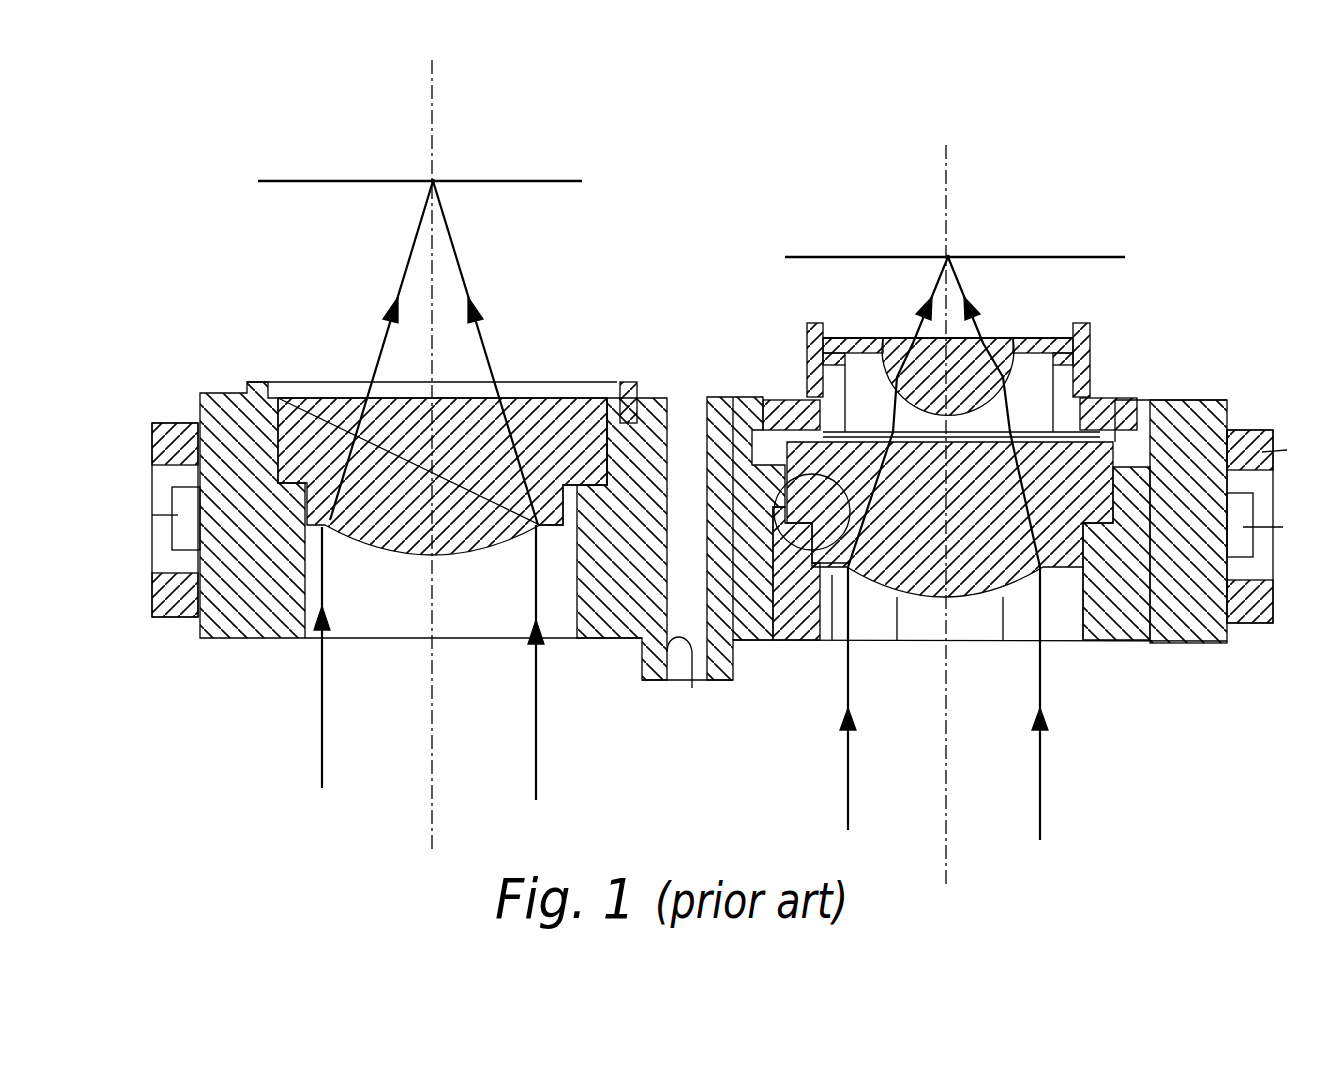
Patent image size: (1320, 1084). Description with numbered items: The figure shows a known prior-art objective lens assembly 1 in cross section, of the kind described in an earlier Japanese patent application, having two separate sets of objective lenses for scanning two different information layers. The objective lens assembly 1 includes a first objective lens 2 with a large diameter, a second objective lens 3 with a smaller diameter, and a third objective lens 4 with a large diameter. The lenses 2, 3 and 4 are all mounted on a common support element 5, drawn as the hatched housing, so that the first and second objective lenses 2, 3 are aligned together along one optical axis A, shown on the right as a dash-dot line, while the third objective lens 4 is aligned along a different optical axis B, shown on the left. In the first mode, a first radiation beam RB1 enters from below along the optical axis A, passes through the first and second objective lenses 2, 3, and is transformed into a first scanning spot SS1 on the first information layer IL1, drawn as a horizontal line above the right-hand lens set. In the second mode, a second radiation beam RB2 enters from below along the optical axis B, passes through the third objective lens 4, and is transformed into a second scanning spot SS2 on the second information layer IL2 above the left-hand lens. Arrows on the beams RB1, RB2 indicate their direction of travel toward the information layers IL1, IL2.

The objective lens assembly 1 is at (172, 183).
The first objective lens 2 is at (997, 641).
The second objective lens 3 is at (901, 641).
The third objective lens 4 is at (270, 400).
The support element 5 is at (600, 638).
The first radiation beam RB1 is at (1042, 817).
The second radiation beam RB2 is at (322, 763).
The first scanning spot SS1 is at (948, 257).
The second scanning spot SS2 is at (433, 177).
The first information layer IL1 is at (1113, 258).
The second information layer IL2 is at (518, 180).
The optical axis AA' A is at (918, 515).
The optical axis BB' B is at (404, 455).